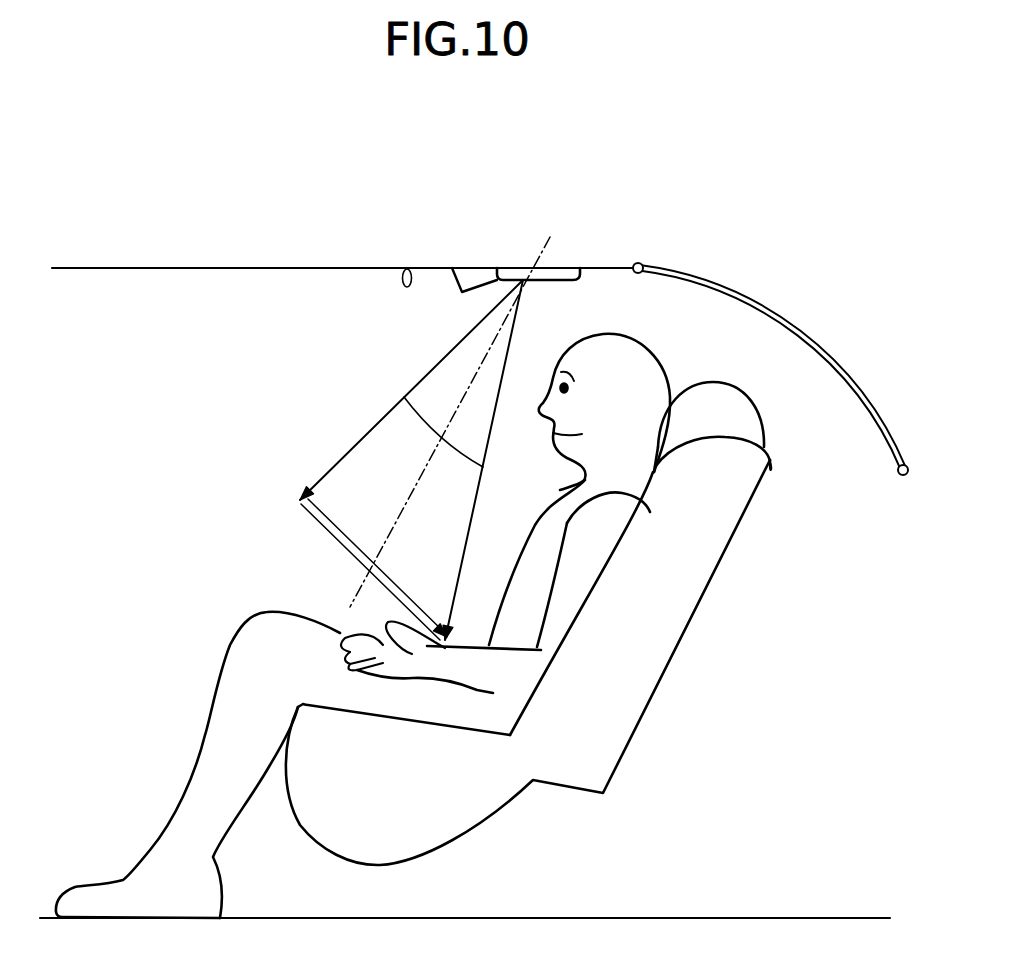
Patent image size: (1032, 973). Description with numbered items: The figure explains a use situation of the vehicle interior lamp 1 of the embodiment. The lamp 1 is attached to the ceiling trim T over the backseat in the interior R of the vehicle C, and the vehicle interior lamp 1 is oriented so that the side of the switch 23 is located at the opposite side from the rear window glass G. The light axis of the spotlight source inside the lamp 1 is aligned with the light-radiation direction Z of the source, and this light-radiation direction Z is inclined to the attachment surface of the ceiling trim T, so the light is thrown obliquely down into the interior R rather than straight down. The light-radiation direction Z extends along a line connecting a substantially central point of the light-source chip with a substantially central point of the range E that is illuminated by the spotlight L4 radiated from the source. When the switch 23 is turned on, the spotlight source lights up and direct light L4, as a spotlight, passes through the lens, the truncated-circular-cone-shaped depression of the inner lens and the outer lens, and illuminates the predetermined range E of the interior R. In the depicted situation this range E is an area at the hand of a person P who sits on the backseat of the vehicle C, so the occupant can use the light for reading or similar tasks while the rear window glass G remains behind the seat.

The vehicle C is at (187, 268).
The ceiling trim T is at (404, 269).
The switch 23 is at (478, 280).
The vehicle interior lamp 1 is at (572, 267).
The light-radiation direction Z is at (444, 410).
The rear window glass G is at (818, 345).
The person P is at (646, 371).
The interior R is at (198, 399).
The spotlight L4 is at (404, 397).
The range E is at (340, 522).